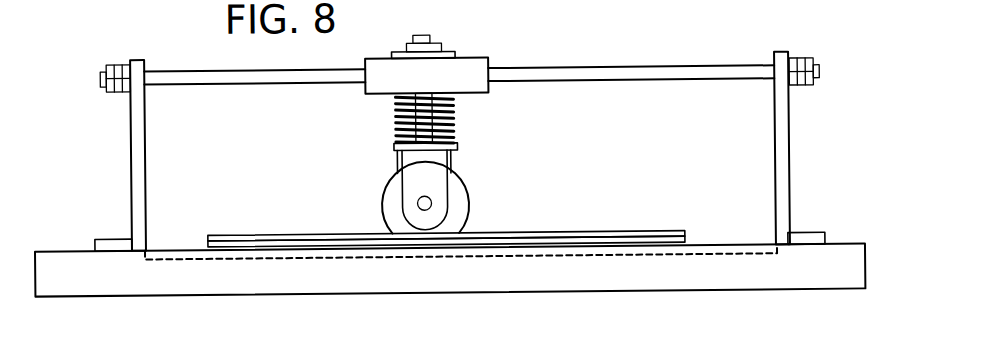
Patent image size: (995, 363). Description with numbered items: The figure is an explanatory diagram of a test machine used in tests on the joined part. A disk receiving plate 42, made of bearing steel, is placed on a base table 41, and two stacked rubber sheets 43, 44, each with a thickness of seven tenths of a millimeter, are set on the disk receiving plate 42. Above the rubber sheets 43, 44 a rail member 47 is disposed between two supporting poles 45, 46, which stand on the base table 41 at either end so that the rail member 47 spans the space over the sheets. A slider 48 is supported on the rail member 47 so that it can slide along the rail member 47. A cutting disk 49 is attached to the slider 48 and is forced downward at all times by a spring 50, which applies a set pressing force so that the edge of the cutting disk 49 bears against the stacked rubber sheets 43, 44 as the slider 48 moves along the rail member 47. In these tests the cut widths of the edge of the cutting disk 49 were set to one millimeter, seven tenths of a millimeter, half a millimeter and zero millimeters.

The base table 41 is at (520, 293).
The disk receiving plate 42 is at (640, 259).
The rubber sheet 43 is at (268, 233).
The rubber sheet 44 is at (207, 246).
The supporting pole 45 is at (132, 158).
The supporting pole 46 is at (791, 146).
The rail member 47 is at (657, 70).
The slider 48 is at (489, 57).
The cutting disk 49 is at (470, 205).
The spring 50 is at (397, 102).